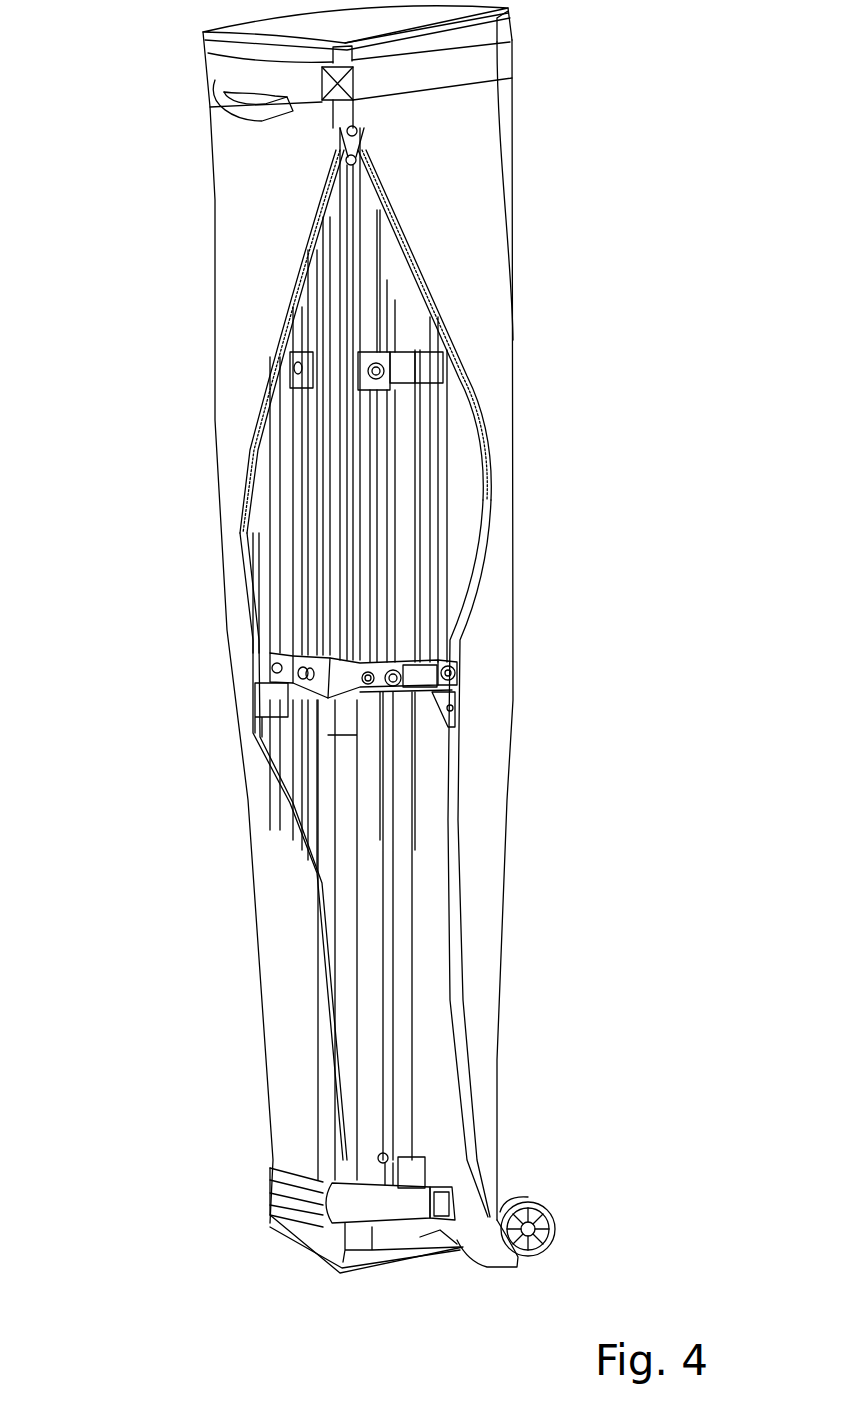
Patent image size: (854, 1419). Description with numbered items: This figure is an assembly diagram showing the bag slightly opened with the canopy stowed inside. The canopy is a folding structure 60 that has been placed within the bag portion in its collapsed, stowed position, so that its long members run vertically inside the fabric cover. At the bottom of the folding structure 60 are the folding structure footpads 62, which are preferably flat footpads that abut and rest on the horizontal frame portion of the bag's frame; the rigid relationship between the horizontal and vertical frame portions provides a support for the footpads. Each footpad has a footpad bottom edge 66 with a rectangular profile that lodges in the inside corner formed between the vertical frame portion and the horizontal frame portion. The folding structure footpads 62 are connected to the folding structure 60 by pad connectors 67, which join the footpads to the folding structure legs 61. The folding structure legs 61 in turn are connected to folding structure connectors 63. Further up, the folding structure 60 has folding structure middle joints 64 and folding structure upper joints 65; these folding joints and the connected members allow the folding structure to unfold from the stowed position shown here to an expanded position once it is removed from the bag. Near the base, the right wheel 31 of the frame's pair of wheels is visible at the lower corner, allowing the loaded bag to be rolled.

The right wheel 31 is at (528, 1198).
The folding structure 60 is at (443, 528).
The folding structure legs 61 is at (327, 813).
The folding structure footpads 62 is at (380, 1250).
The folding structure connectors 63 is at (270, 683).
The folding structure middle joints 64 is at (452, 672).
The folding structure upper joints 65 is at (383, 350).
The footpad bottom edge 66 is at (447, 1243).
The pad connectors 67 is at (413, 1175).